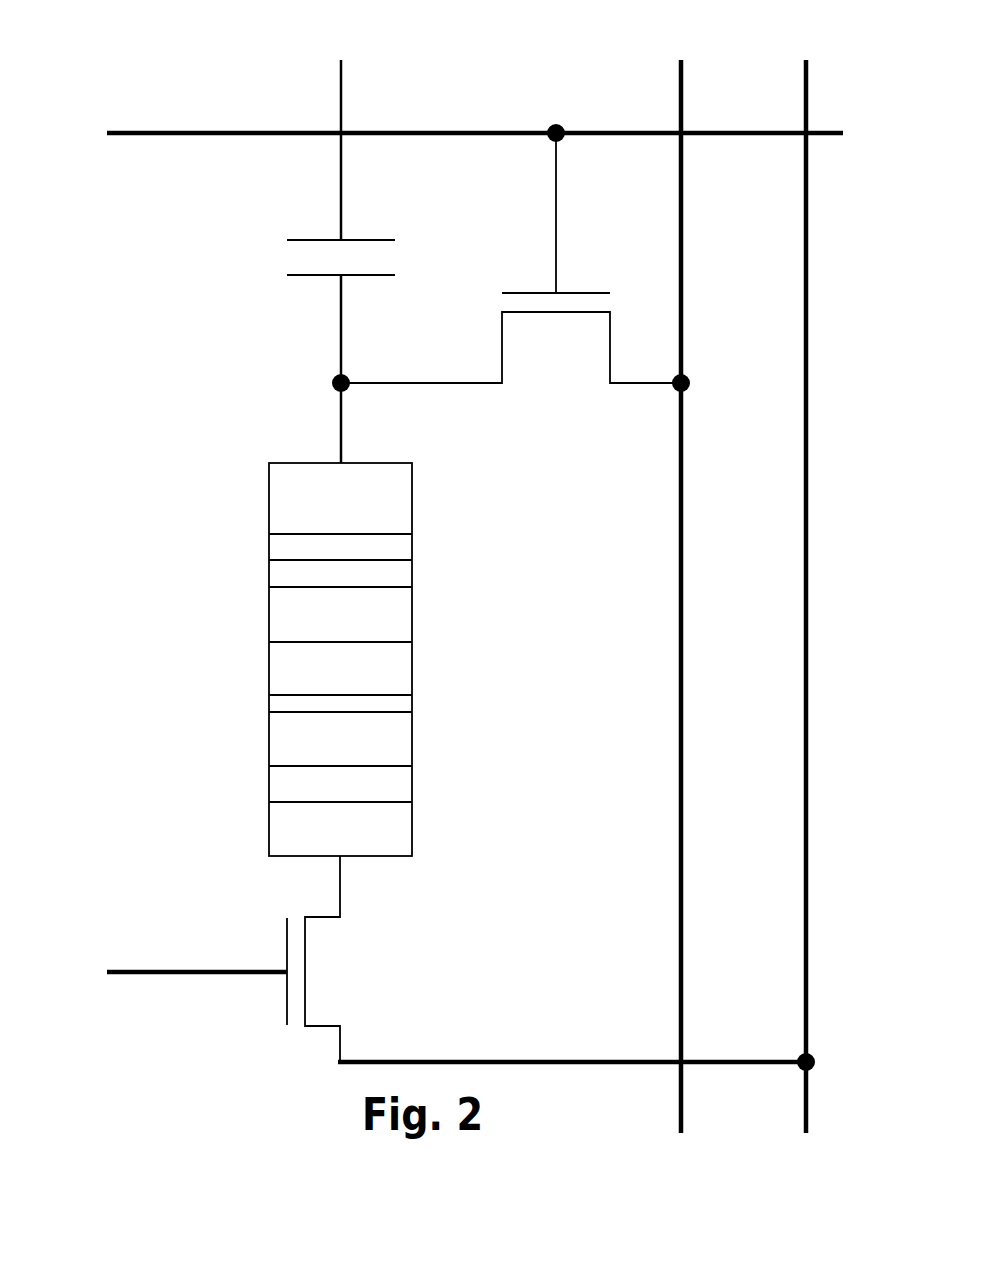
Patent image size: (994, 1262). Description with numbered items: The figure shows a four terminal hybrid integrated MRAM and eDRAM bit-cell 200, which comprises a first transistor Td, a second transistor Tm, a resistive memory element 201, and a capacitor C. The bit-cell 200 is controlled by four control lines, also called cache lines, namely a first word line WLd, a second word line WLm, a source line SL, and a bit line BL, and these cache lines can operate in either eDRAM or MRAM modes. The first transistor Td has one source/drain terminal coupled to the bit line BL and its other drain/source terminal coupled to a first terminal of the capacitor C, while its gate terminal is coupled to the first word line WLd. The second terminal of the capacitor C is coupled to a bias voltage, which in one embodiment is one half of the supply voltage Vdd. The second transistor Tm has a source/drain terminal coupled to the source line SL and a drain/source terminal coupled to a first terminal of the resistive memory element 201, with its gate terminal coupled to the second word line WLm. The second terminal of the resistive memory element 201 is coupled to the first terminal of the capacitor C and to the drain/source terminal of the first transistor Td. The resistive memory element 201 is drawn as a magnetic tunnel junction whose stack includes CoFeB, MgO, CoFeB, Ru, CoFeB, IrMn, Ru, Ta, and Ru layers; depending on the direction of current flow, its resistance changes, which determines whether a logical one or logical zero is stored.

The bit-cell 200 is at (444, 597).
The resistive memory element 201 is at (452, 660).
The capacitor C is at (326, 257).
The first transistor Td is at (511, 265).
The second transistor Tm is at (327, 959).
The first word line WLd is at (445, 133).
The second word line WLm is at (166, 972).
The bit line BL is at (680, 597).
The source line SL is at (806, 597).